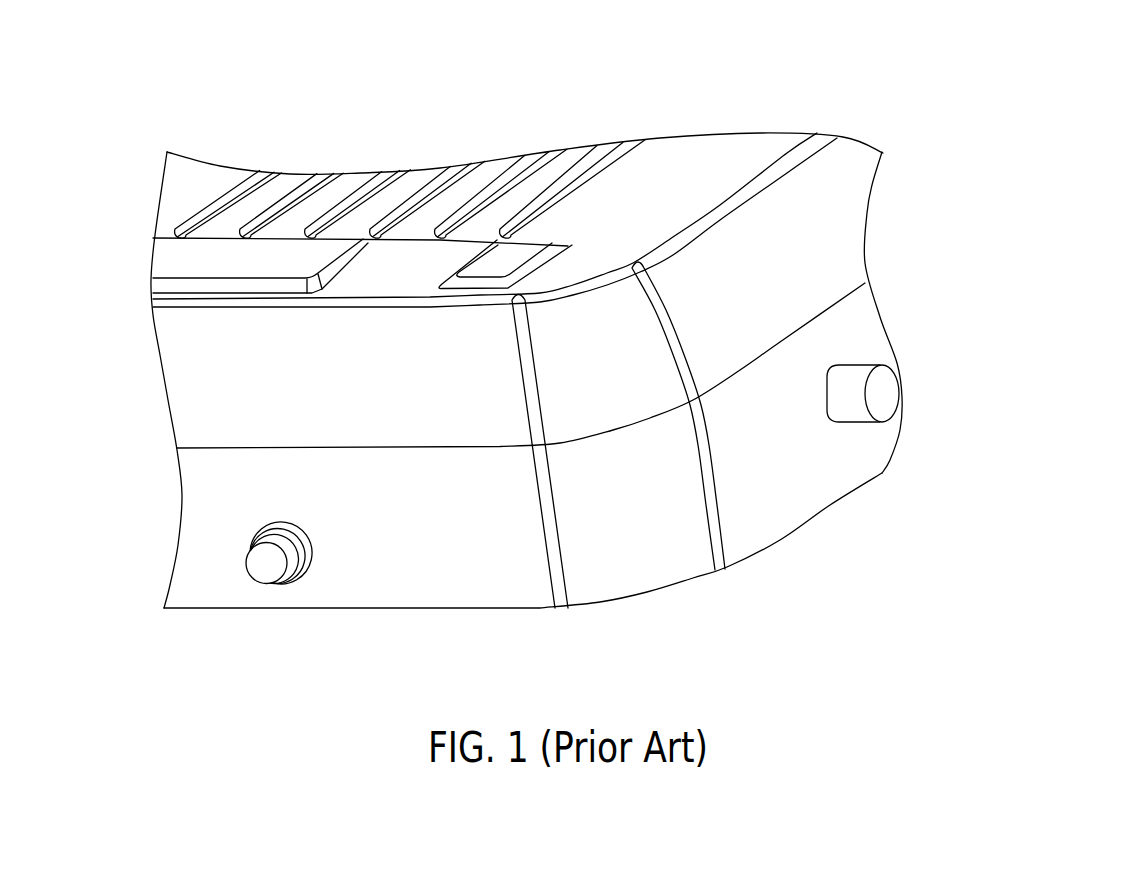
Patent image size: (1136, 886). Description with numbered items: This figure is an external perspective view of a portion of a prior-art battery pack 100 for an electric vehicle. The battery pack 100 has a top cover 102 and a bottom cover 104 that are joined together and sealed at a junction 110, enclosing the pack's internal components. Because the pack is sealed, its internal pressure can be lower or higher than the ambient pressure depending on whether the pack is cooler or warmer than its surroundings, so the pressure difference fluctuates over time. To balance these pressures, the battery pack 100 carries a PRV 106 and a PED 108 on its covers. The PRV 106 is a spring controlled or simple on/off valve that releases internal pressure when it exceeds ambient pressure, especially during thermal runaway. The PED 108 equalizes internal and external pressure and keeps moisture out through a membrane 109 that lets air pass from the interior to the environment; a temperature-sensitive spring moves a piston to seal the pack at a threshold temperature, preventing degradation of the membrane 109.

The battery pack 100 is at (1037, 99).
The top cover 102 is at (843, 137).
The bottom cover 104 is at (870, 475).
The PRV 106 is at (887, 395).
The PED 108 is at (291, 585).
The membrane 109 is at (265, 571).
The junction 110 is at (865, 283).